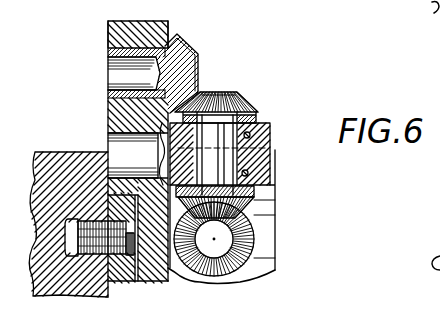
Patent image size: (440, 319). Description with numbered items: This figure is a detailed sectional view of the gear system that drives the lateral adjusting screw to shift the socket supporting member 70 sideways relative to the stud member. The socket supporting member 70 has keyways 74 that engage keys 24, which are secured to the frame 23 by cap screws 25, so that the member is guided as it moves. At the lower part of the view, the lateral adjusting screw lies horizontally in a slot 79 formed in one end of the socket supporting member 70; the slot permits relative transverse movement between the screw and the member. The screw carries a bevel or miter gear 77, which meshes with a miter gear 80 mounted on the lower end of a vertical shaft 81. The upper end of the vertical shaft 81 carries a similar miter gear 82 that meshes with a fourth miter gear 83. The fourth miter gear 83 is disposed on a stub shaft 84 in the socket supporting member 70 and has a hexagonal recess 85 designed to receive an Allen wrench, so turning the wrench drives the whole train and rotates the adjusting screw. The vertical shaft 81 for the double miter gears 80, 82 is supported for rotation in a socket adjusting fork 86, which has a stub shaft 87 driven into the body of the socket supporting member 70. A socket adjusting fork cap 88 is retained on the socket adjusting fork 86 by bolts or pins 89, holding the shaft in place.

The frame 23 is at (37, 153).
The key 24 is at (118, 203).
The cap screw 25 is at (88, 227).
The socket supporting member 70 is at (108, 110).
The keyway 74 is at (138, 281).
The miter gear 77 is at (257, 233).
The slot 79 is at (267, 246).
The miter gear 80 is at (256, 198).
The vertical shaft 81 is at (230, 130).
The miter gear 82 is at (238, 94).
The fourth miter gear 83 is at (190, 45).
The stub shaft 84 is at (112, 53).
The hexagonal recess 85 is at (113, 77).
The socket adjusting fork 86 is at (170, 133).
The stub shaft 87 is at (120, 147).
The socket adjusting fork cap 88 is at (270, 132).
The bolts or pins 89 is at (248, 172).